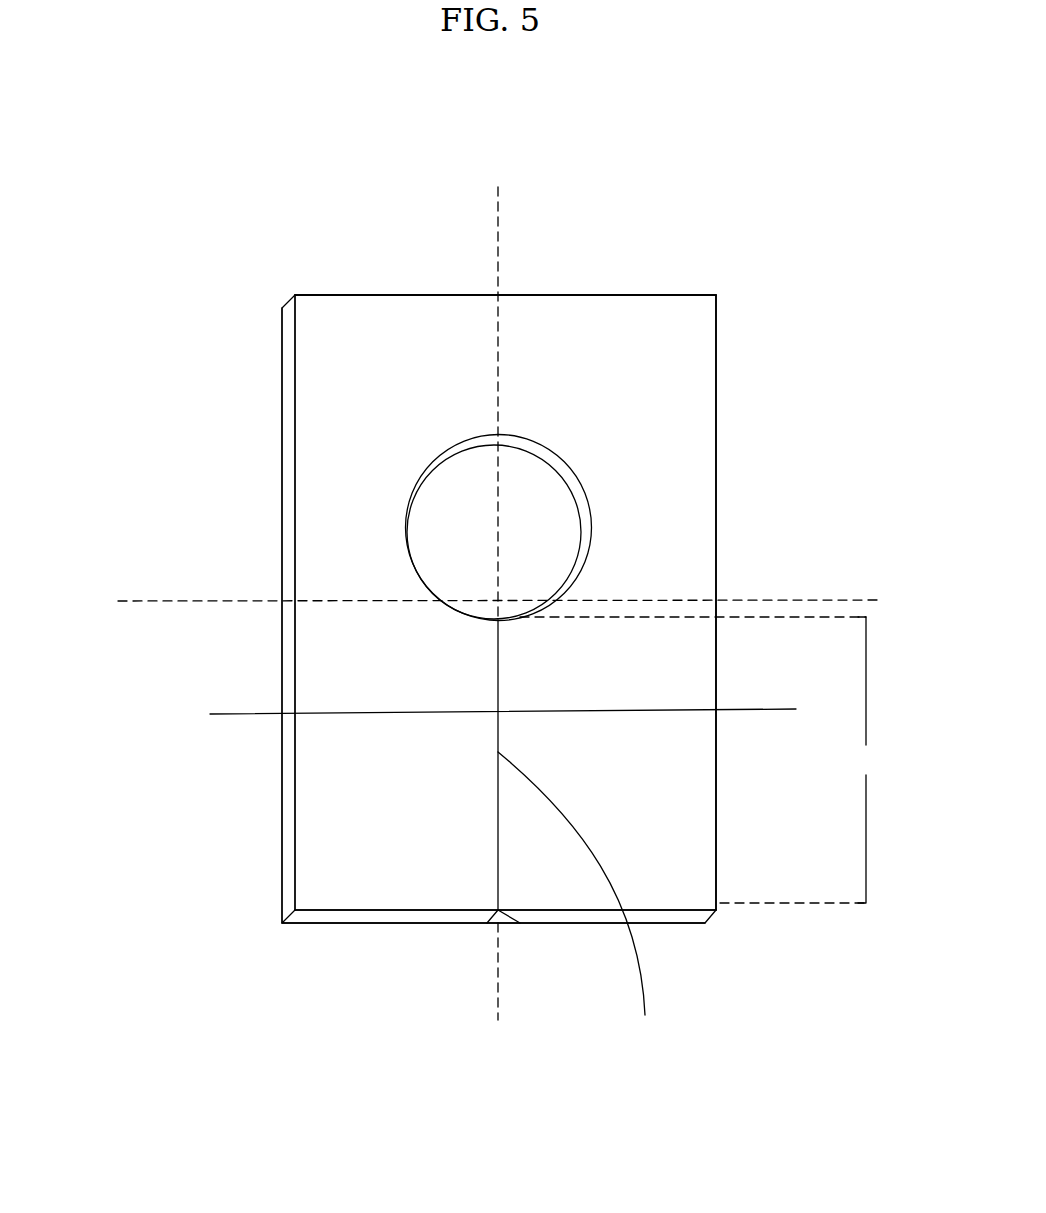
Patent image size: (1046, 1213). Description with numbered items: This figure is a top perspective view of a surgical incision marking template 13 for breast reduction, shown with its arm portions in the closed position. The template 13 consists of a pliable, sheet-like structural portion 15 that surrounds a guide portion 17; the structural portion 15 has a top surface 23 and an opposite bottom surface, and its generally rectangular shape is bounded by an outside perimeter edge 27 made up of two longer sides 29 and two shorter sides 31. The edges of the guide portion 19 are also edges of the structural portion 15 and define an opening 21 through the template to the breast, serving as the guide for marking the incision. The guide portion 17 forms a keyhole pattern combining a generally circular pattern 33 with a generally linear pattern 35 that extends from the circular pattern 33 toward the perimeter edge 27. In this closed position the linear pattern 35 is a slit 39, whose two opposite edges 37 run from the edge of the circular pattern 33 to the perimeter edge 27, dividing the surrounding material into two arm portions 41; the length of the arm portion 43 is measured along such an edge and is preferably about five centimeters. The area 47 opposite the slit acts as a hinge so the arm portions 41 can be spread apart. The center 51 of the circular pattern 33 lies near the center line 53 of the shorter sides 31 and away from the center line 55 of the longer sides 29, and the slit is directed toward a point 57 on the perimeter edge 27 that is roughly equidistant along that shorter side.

The template 13 is at (758, 290).
The structural portion 15 is at (352, 365).
The guide portion 17 is at (540, 565).
The edges of the guide portion 19 is at (487, 442).
The opening 21 is at (556, 527).
The top surface 23 is at (630, 372).
The outside perimeter edge 27 is at (560, 295).
The longer sides 29 is at (288, 420).
The shorter sides 31 is at (440, 295).
The generally circular pattern 33 is at (453, 527).
The generally linear pattern 35 is at (482, 790).
The opposite edges of the linear pattern 37 is at (501, 711).
The slit 39 is at (581, 901).
The arm portions 41 is at (328, 805).
The length of the arm portion 43 is at (701, 760).
The hinge area 47 is at (452, 377).
The center of the circular pattern 51 is at (500, 523).
The center line of the shorter sides 53 is at (496, 581).
The center line of the longer sides 55 is at (483, 603).
The point at the outside perimeter edge 57 is at (498, 910).